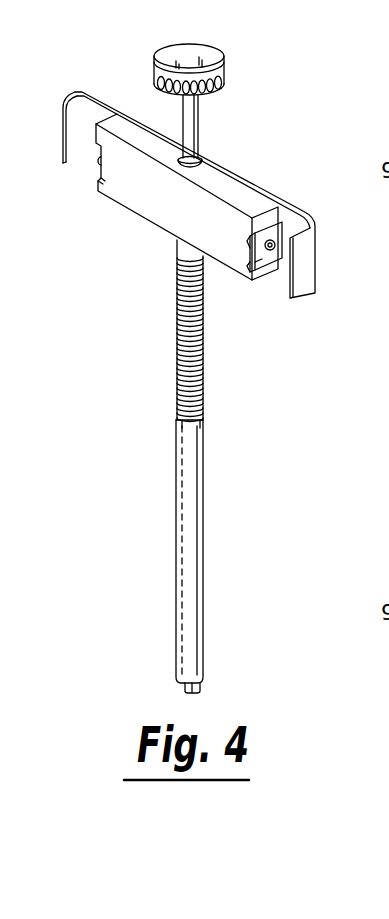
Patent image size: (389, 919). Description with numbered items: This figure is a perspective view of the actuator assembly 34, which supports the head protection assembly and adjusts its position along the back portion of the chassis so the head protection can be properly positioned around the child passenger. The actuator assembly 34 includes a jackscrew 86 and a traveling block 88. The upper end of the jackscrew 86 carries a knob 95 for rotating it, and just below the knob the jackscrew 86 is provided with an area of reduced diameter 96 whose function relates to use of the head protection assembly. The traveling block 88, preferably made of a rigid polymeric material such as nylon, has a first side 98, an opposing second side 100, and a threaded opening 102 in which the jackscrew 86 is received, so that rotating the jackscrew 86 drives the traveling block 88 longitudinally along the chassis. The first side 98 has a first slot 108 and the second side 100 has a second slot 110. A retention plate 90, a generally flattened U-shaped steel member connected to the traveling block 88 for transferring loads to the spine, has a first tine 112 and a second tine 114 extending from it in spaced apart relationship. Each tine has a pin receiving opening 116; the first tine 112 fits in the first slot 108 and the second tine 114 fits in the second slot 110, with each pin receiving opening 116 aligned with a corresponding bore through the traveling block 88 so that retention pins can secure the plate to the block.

The actuator assembly 34 is at (300, 93).
The jackscrew 86 is at (174, 442).
The traveling block 88 is at (150, 224).
The retention plate 90 is at (87, 91).
The knob 95 is at (193, 44).
The area of reduced diameter 96 is at (198, 118).
The first side 98 is at (92, 135).
The second side 100 is at (283, 247).
The threaded opening 102 is at (202, 156).
The first slot 108 is at (108, 182).
The second slot 110 is at (258, 254).
The first tine 112 is at (96, 154).
The second tine 114 is at (261, 258).
The pin receiving opening 116 is at (284, 237).